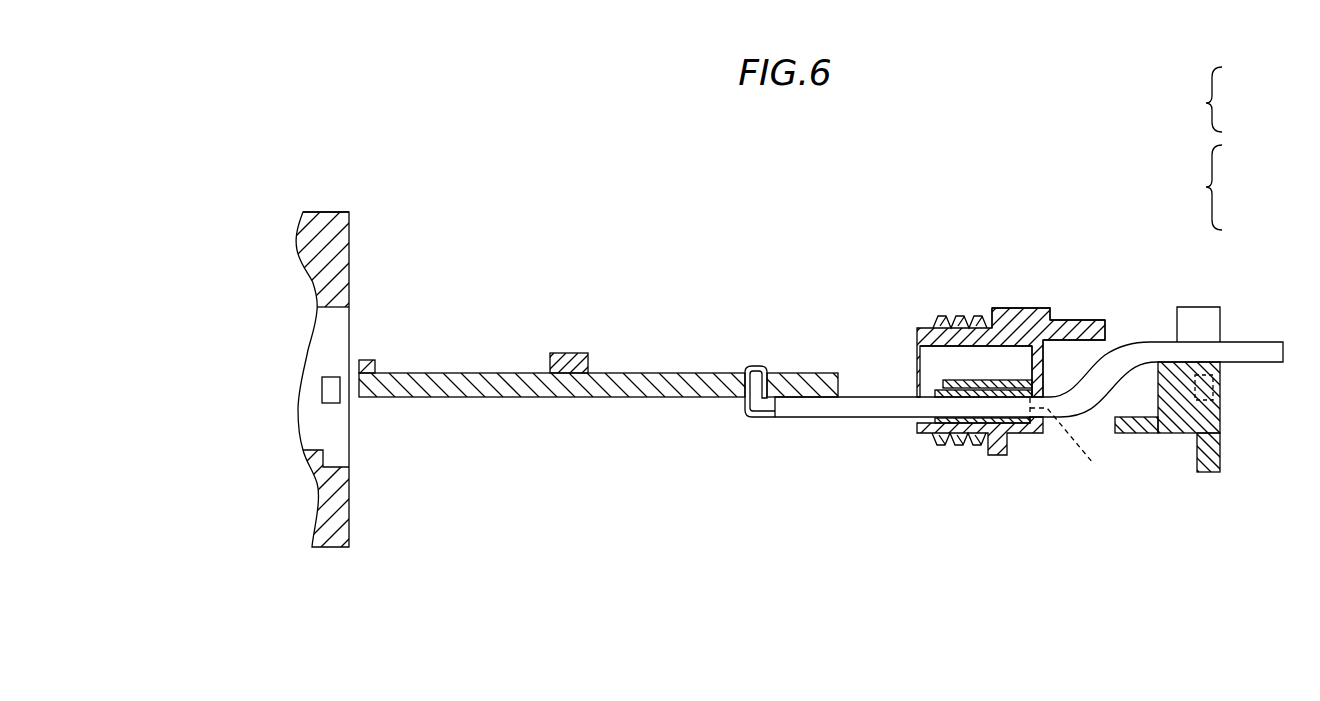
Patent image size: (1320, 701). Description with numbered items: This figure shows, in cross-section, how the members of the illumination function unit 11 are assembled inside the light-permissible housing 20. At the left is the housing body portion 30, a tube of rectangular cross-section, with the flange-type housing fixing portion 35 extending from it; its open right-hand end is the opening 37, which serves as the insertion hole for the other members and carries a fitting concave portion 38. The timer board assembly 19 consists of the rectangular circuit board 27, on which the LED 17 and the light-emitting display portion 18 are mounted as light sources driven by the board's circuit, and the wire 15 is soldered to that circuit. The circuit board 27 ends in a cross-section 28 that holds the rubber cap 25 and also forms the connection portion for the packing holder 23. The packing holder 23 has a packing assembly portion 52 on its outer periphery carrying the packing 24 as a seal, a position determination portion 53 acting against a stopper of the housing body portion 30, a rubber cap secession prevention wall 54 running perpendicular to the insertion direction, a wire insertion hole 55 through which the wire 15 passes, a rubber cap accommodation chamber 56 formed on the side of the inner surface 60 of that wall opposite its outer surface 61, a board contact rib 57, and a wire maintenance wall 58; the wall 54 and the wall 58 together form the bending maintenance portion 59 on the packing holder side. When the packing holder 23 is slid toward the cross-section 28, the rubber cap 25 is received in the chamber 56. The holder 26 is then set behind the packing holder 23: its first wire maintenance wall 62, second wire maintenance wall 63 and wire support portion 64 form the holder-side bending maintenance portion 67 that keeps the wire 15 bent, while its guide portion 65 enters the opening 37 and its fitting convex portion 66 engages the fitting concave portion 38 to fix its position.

The shifting device 11 is at (617, 593).
The wire 15 is at (860, 407).
The LED 17 is at (553, 362).
The light-emitting display portion 18 is at (367, 367).
The timer board assembly 19 is at (650, 385).
The light-permissible housing 20 is at (338, 520).
The packing holder 23 is at (1020, 325).
The packing 24 is at (950, 322).
The rubber cap 25 is at (1035, 433).
The holder 26 is at (1173, 433).
The circuit board 27 is at (795, 385).
The cross-section 28 is at (838, 387).
The housing body portion 30 is at (335, 240).
The housing fixing portion 35 is at (323, 222).
The opening 37 is at (338, 433).
The fitting concave portion 38 is at (327, 388).
The packing assembly portion 52 is at (927, 325).
The position determination portion 53 is at (988, 325).
The rubber cap secession prevention wall 54 is at (1073, 325).
The wire insertion hole 55 is at (1068, 442).
The rubber cap accommodation chamber 56 is at (953, 447).
The board contact rib 57 is at (943, 385).
The wire maintenance wall 58 is at (1098, 325).
The bending maintenance portion 59 is at (1214, 101).
The inner surface 60 is at (1030, 362).
The outer surface 61 is at (1043, 378).
The first wire maintenance wall 62 is at (1133, 422).
The second wire maintenance wall 63 is at (1158, 387).
The wire support portion 64 is at (1192, 357).
The guide portion 65 is at (1212, 452).
The fitting convex portion 66 is at (1218, 390).
The bending maintenance portion 67 is at (1213, 187).